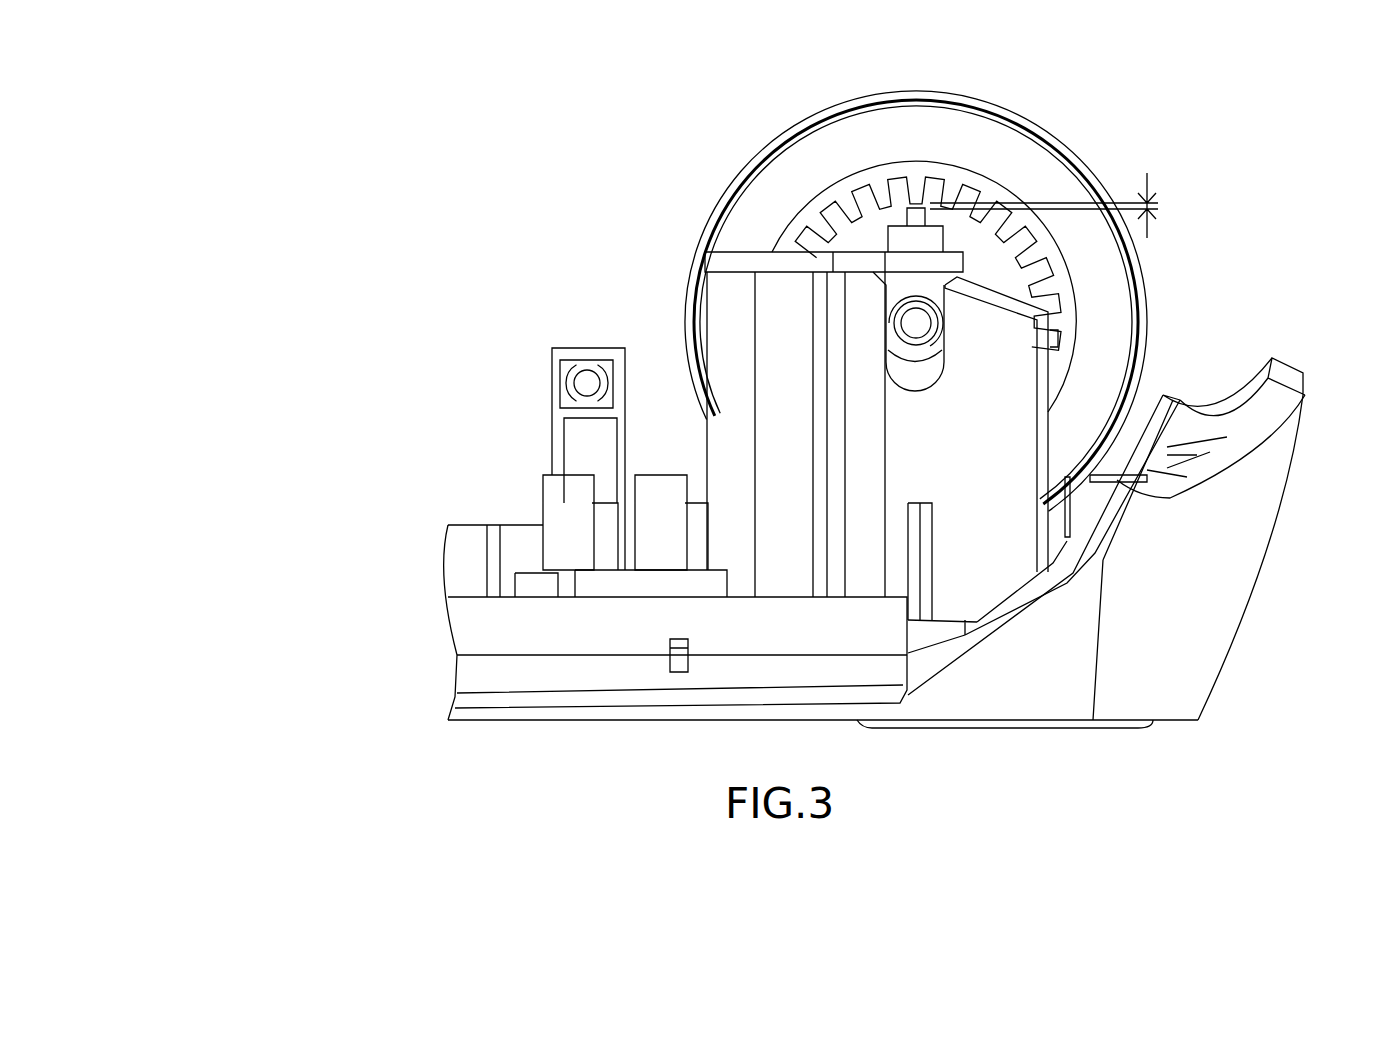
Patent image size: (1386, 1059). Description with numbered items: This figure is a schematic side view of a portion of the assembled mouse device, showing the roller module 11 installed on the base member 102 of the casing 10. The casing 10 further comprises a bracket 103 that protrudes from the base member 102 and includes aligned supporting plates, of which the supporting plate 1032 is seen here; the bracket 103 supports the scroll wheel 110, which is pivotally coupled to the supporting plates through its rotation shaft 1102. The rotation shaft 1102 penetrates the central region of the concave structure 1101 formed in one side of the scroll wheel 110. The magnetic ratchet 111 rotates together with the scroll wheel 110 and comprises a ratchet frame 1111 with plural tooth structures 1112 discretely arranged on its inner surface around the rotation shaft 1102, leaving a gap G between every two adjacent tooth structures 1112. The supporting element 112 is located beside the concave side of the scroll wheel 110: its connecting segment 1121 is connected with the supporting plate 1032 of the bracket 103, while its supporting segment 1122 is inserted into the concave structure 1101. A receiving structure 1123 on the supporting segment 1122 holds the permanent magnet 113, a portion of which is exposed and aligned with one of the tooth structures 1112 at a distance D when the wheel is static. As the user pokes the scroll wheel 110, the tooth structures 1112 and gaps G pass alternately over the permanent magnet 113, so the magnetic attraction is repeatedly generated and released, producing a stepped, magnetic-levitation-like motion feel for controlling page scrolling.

The casing 10 is at (306, 198).
The base member 102 is at (1233, 593).
The bracket 103 is at (429, 481).
The supporting plate 1032 is at (727, 347).
The roller module 11 is at (306, 312).
The scroll wheel 110 is at (451, 198).
The concave structure 1101 is at (995, 272).
The rotation shaft 1102 is at (918, 325).
The magnetic ratchet 111 is at (1047, 44).
The ratchet frame 1111 is at (935, 173).
The tooth structure 1112 is at (917, 188).
The supporting element 112 is at (451, 312).
The connecting segment 1121 is at (740, 262).
The supporting segment 1122 is at (905, 332).
The receiving structure 1123 is at (905, 238).
The permanent magnet 113 is at (907, 217).
The distance D is at (1055, 205).
The gap G is at (1035, 277).